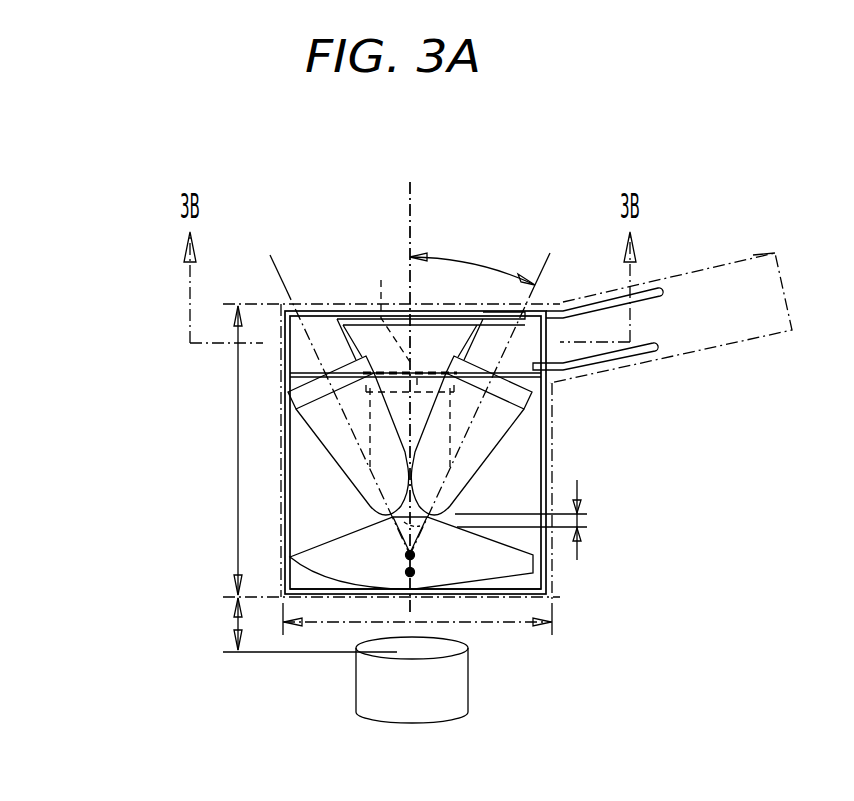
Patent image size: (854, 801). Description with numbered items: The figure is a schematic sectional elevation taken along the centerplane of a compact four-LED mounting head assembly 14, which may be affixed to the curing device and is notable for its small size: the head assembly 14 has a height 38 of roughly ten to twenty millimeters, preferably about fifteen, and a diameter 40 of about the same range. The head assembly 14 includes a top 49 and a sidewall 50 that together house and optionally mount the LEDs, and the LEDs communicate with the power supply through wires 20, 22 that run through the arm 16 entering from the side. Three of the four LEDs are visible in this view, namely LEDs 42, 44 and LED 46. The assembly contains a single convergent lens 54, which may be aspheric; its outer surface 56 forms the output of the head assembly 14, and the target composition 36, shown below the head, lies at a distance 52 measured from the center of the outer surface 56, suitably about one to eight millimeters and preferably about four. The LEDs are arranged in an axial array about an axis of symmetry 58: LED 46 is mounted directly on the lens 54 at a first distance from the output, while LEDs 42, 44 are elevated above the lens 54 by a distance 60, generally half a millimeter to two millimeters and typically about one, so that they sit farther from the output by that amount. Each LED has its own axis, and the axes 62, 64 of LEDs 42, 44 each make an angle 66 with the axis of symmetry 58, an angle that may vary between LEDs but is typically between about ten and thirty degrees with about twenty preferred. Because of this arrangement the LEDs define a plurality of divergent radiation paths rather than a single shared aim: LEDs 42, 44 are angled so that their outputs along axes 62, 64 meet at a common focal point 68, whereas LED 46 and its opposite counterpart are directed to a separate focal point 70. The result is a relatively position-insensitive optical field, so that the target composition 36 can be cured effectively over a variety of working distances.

The head assembly 14 is at (135, 142).
The arm 16 is at (755, 255).
The wire 20 is at (647, 285).
The wire 22 is at (642, 352).
The target composition 36 is at (362, 702).
The height 38 is at (238, 485).
The diameter 40 is at (462, 625).
The LED 42 is at (328, 430).
The LED 44 is at (485, 436).
The LED 46 is at (388, 304).
The top 49 is at (337, 318).
The sidewall 50 is at (283, 525).
The distance 52 is at (237, 627).
The convergent lens 54 is at (322, 564).
The outer surface 56 is at (420, 595).
The axis of symmetry 58 is at (410, 187).
The distance 60 is at (578, 485).
The axis 62 is at (285, 284).
The axis 64 is at (538, 272).
The angle 66 is at (472, 258).
The common focal point 68 is at (424, 553).
The focal point 70 is at (405, 573).